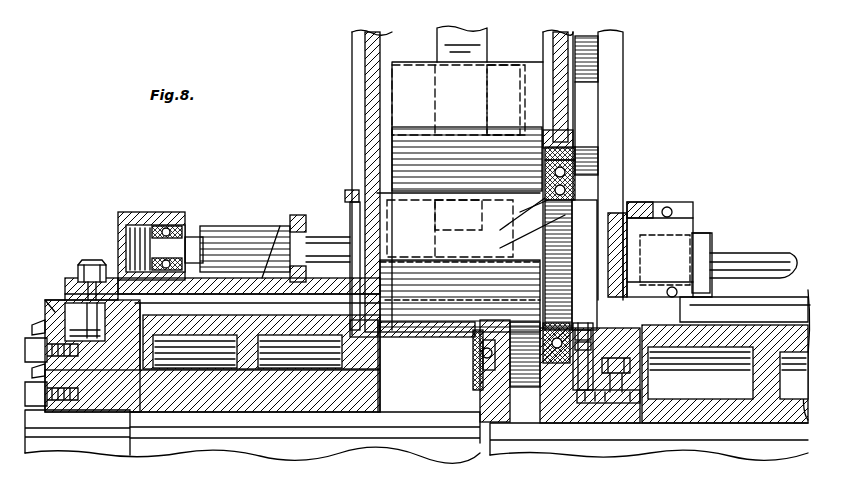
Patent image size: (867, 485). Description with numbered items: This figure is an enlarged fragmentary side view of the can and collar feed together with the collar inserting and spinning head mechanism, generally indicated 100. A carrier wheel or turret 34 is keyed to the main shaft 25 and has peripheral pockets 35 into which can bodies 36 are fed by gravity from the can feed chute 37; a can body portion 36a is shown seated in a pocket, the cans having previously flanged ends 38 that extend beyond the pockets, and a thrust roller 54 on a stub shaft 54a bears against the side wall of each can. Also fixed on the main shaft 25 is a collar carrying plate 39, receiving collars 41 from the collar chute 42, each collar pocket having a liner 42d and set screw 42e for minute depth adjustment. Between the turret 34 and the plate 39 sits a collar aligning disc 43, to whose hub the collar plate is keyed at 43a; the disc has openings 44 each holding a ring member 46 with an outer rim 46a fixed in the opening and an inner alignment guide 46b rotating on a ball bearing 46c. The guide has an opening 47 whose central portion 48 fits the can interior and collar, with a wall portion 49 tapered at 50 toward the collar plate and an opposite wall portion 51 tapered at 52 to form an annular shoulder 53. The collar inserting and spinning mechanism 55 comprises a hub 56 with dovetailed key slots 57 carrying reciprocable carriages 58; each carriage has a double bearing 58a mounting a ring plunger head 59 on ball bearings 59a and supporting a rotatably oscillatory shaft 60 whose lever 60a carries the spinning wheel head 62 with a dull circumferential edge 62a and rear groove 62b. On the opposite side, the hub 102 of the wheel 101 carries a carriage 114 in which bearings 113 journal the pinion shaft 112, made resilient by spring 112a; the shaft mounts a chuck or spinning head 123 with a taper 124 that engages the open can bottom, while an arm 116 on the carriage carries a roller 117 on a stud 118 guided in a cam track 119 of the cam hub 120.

The main shaft 25 is at (442, 450).
The carrier wheel or turret 34 is at (487, 400).
The pockets 35 is at (427, 312).
The can bodies 36 is at (458, 141).
The rotor section 36a is at (490, 210).
The can feed chute 37 is at (555, 20).
The flanged ends 38 is at (360, 350).
The collar carrying plate 39 is at (588, 365).
The collars 41 is at (588, 100).
The collar chute 42 is at (617, 57).
The liner 42d is at (591, 346).
The set screw 42e is at (591, 335).
The collar aligning disc 43 is at (548, 410).
The key 43a is at (630, 395).
The openings 44 is at (567, 148).
The ring member 46 is at (560, 165).
The outer rim 46a is at (520, 165).
The inner alignment guide 46b is at (520, 395).
The ball bearing 46c is at (519, 211).
The opening 47 is at (521, 218).
The central portion 48 is at (530, 235).
The wall portion 49 is at (571, 265).
The taper 50 is at (540, 285).
The wall portion 51 is at (545, 268).
The taper 52 is at (484, 362).
The annular shoulder 53 is at (540, 305).
The thrust roller 54 is at (512, 410).
The stub shaft 54a is at (480, 345).
The collar inserting and spinning mechanism 55 is at (712, 250).
The hub 56 is at (730, 410).
The dovetailed key slots 57 is at (717, 322).
The reciprocable carriages 58 is at (745, 355).
The double bearing 58a is at (693, 233).
The ring plunger head 59 is at (660, 205).
The ball bearings 59a is at (670, 245).
The rotatably oscillatory shaft 60 is at (775, 265).
The lever 60a is at (640, 250).
The spinning wheel head 62 is at (612, 250).
The dull circumferential edge 62a is at (616, 215).
The groove 62b is at (632, 220).
The spindle housing 100 is at (174, 200).
The wheel 101 is at (320, 405).
The hub 102 is at (252, 405).
The pinion shaft 112 is at (205, 228).
The spring 112a is at (125, 240).
The bearings 113 is at (290, 200).
The carriage 114 is at (266, 246).
The arm 116 is at (74, 305).
The roller 117 is at (50, 300).
The stud 118 is at (85, 283).
The bolts 119 is at (35, 330).
The cam hub 120 is at (147, 412).
The chuck or spinning head 123 is at (350, 214).
The taper 124 is at (345, 196).